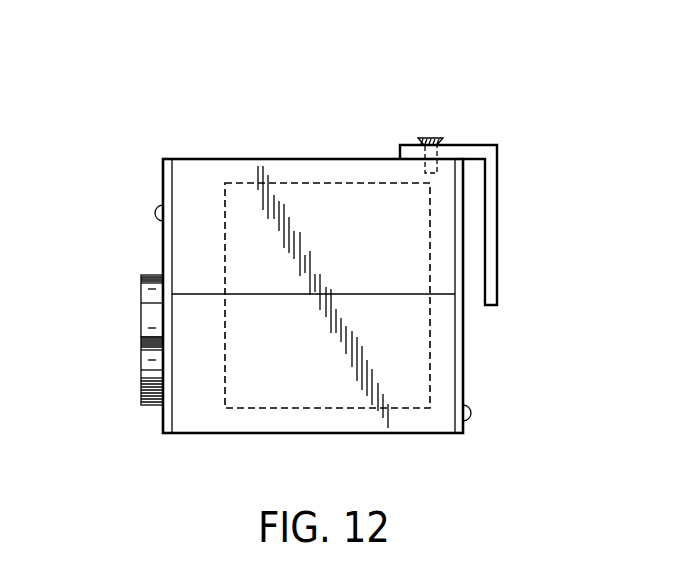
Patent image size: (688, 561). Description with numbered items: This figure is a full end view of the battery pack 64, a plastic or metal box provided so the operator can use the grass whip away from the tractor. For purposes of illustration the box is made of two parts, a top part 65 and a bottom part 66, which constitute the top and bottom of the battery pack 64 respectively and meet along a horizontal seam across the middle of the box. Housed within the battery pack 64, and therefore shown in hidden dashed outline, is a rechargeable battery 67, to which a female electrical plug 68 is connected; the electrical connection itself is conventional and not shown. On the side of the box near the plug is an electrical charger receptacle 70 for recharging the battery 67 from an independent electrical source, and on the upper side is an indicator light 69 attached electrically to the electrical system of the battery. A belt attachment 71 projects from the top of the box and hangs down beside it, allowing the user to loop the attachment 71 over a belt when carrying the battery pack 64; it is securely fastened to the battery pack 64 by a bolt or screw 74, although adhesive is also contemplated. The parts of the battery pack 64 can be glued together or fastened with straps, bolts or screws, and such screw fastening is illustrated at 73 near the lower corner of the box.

The battery pack 64 is at (230, 104).
The top part 65 is at (206, 178).
The bottom part 66 is at (198, 405).
The rechargeable battery 67 is at (332, 183).
The female electrical plug 68 is at (140, 372).
The indicator light 69 is at (156, 207).
The electrical charger receptacle 70 is at (152, 318).
The belt attachment 71 is at (497, 202).
The screw fastening location 73 is at (470, 410).
The bolt or screw 74 is at (432, 138).